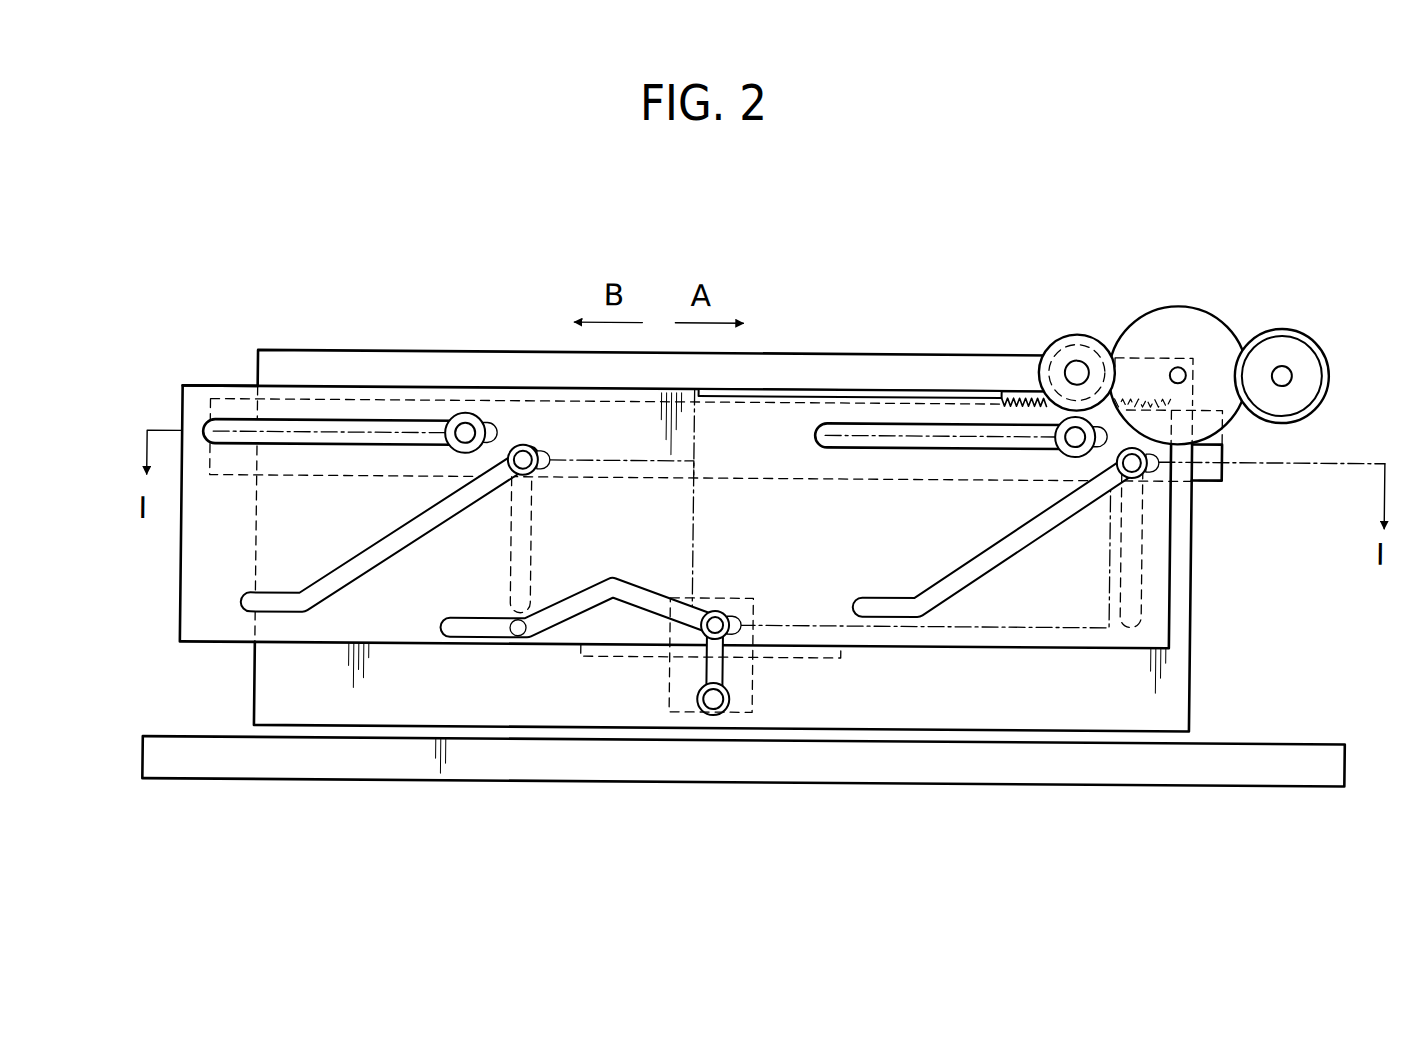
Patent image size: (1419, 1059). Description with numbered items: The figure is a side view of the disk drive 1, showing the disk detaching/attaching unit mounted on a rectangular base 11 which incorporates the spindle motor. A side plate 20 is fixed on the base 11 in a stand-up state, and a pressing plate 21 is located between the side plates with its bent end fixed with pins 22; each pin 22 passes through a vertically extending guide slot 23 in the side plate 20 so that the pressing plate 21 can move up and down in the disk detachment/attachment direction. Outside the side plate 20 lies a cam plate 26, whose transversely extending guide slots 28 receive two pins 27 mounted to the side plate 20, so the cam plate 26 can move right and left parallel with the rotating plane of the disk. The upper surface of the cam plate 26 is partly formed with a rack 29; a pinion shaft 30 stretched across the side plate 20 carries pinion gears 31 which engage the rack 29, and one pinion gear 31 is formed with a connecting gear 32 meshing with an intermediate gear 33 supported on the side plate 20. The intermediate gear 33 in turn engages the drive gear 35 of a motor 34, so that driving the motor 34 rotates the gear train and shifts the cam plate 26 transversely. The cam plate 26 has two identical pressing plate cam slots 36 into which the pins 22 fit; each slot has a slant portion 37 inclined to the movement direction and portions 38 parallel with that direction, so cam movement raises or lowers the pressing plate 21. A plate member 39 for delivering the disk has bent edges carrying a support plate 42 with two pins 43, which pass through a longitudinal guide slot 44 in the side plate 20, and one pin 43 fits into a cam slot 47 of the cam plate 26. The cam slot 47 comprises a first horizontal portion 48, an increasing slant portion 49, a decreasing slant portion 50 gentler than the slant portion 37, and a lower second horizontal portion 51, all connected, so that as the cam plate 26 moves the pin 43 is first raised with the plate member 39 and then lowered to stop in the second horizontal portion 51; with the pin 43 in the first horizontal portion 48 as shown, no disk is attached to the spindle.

The disk drive 1 is at (540, 236).
The base 11 is at (1274, 748).
The side plate 20 is at (293, 350).
The pressing plate 21 is at (231, 484).
The pin 22 is at (538, 454).
The guide slot 23 is at (533, 560).
The cam plate 26 is at (212, 386).
The pin 27 is at (464, 412).
The guide slot 28 is at (340, 424).
The rack 29 is at (1008, 392).
The pinion shaft 30 is at (1068, 356).
The pinion gear 31 is at (1087, 330).
The connecting gear 32 is at (1082, 340).
The intermediate gear 33 is at (1178, 303).
The motor 34 is at (1314, 340).
The drive gear 35 is at (1282, 346).
The pressing plate cam slot 36 is at (357, 584).
The slant portion 37 is at (392, 537).
The parallel portion 38 is at (535, 471).
The plate member 39 is at (818, 661).
The support plate 42 is at (753, 680).
The pin 43 is at (721, 610).
The guide slot 44 is at (706, 668).
The cam slot 47 is at (561, 626).
The first horizontal portion 48 is at (757, 613).
The increasing slant portion 49 is at (667, 597).
The decreasing slant portion 50 is at (597, 606).
The second horizontal portion 51 is at (468, 618).